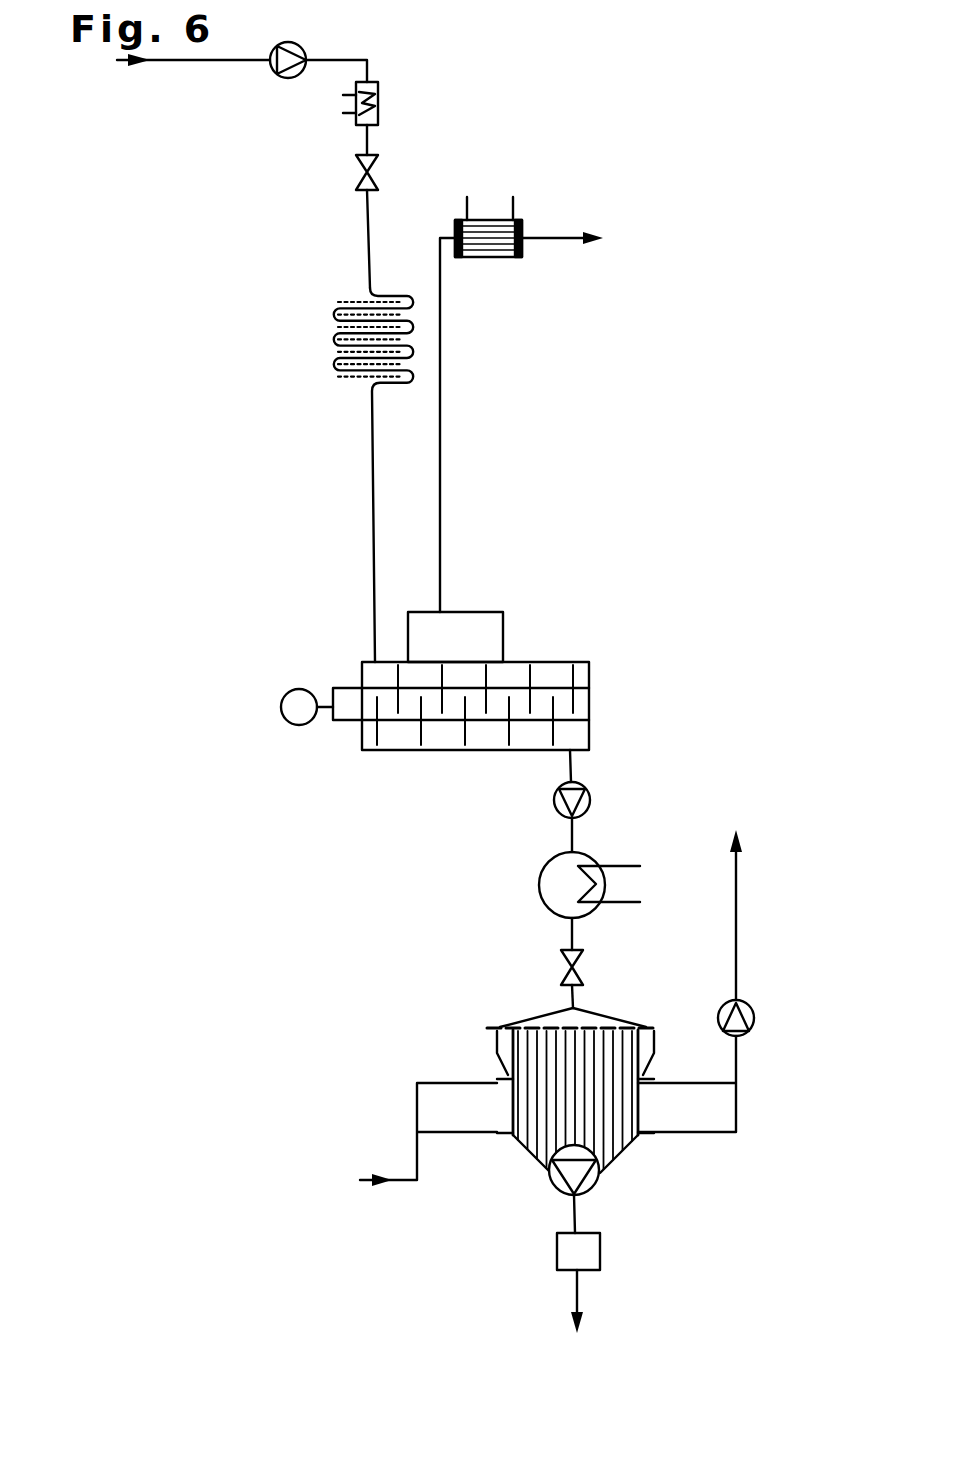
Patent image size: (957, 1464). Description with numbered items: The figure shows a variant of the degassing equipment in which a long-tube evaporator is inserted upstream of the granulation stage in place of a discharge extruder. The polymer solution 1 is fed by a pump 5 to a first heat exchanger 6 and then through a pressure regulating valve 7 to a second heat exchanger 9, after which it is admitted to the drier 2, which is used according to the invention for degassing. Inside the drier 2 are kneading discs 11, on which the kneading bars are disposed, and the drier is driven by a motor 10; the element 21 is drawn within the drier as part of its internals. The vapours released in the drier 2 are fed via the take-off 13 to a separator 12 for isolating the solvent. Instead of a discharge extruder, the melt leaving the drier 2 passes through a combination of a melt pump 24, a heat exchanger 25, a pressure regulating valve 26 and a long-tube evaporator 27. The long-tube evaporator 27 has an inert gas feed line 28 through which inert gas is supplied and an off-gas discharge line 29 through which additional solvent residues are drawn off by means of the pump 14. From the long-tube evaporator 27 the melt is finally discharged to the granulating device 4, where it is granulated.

The polymer solution 1 is at (207, 63).
The pump 5 is at (293, 76).
The first heat exchanger 6 is at (375, 100).
The pressure regulating valve 7 is at (373, 168).
The second heat exchanger 9 is at (332, 337).
The separator 12 is at (483, 228).
The take-off 13 is at (462, 610).
The drier 2 is at (461, 740).
The upper baffles 21 is at (393, 732).
The kneading discs 11 is at (510, 735).
The motor 10 is at (283, 710).
The melt pump 24 is at (590, 805).
The heat exchanger 25 is at (560, 866).
The pressure regulating valve 26 is at (568, 974).
The long-tube evaporator 27 is at (625, 1150).
The inert gas feed line 28 is at (417, 1152).
The off-gas discharge line 29 is at (742, 887).
The pump 14 is at (752, 1012).
The granulating device 4 is at (598, 1249).